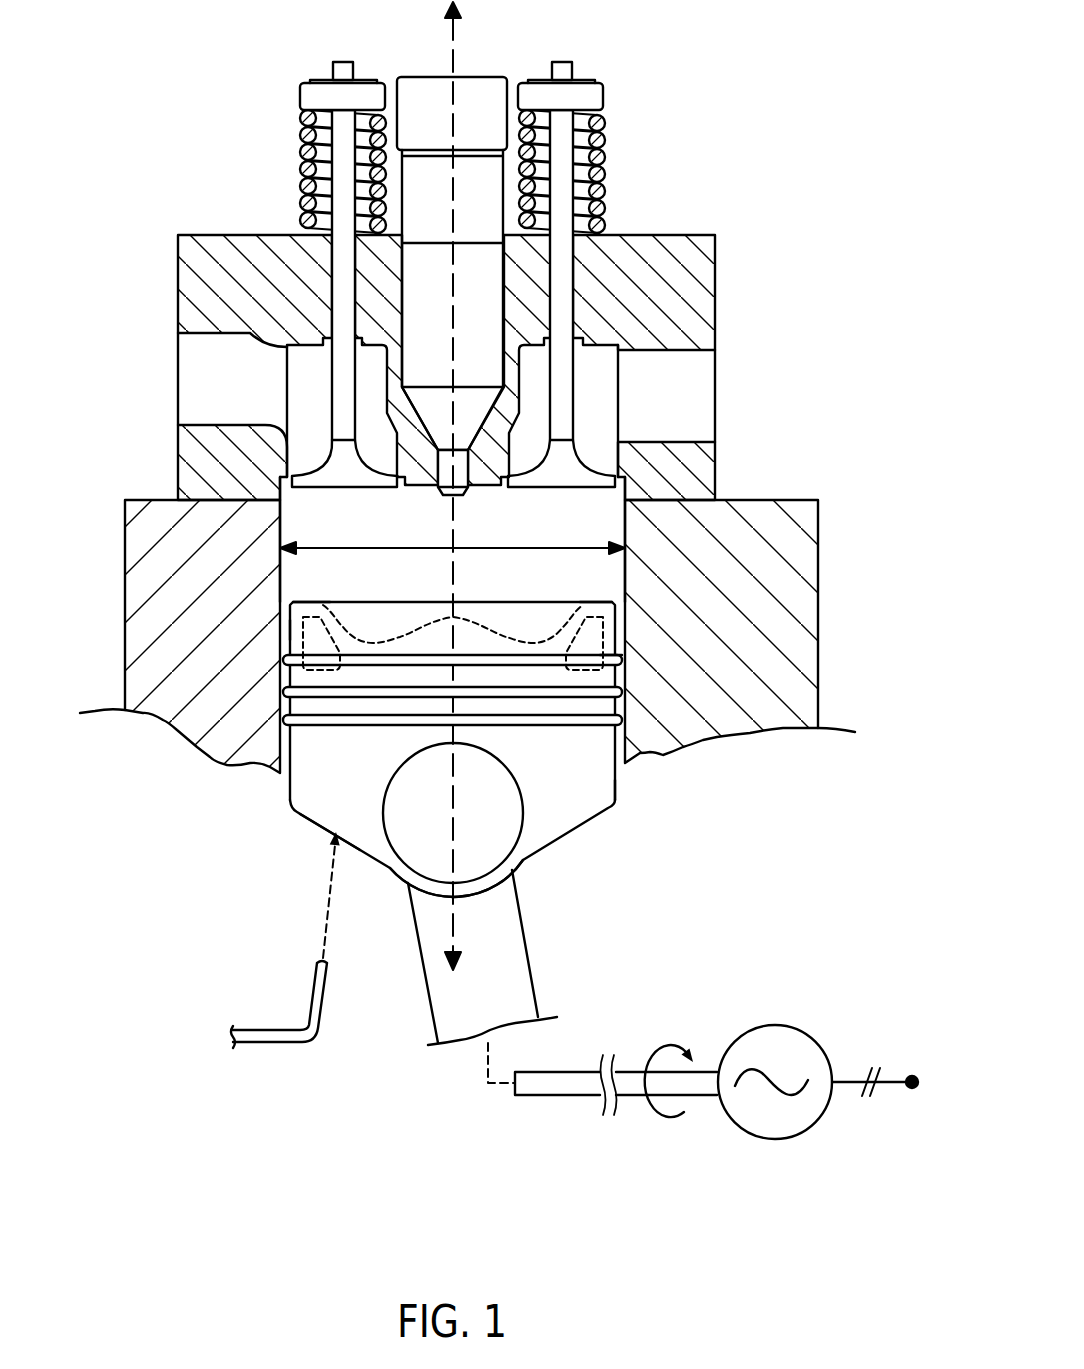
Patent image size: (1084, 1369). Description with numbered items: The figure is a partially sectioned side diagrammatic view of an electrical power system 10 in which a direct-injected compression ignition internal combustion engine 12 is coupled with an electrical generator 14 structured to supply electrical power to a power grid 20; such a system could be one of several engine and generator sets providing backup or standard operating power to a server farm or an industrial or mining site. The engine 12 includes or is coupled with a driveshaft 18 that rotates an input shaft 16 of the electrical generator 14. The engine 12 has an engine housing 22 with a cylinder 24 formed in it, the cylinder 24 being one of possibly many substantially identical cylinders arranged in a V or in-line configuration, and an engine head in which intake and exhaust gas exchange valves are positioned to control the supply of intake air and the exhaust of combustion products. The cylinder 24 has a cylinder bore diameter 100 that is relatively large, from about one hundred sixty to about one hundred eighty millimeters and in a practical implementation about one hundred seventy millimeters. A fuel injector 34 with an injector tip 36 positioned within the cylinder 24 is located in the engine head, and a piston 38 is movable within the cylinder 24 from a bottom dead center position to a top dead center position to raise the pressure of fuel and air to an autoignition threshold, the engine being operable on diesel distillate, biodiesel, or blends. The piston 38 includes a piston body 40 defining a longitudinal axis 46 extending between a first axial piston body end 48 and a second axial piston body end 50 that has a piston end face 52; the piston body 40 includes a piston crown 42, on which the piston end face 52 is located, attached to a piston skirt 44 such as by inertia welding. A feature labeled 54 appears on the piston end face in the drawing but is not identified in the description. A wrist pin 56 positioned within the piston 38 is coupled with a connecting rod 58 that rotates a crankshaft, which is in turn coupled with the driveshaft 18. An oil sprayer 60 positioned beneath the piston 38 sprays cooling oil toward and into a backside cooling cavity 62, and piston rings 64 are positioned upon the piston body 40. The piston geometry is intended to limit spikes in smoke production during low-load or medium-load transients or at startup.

The electrical power system 10 is at (150, 1018).
The direct-injected compression ignition internal combustion engine 12 is at (790, 132).
The electrical generator 14 is at (816, 1126).
The input shaft 16 is at (700, 1097).
The driveshaft 18 is at (572, 1097).
The power grid 20 is at (902, 1100).
The engine housing 22 is at (790, 500).
The cylinder 24 is at (308, 532).
The fuel injector 34 is at (493, 292).
The injector tip 36 is at (440, 494).
The piston 38 is at (608, 706).
The piston body 40 is at (293, 626).
The piston crown 42 is at (285, 604).
The piston skirt 44 is at (605, 793).
The longitudinal axis 46 is at (452, 812).
The first axial piston body end 48 is at (310, 832).
The second axial piston body end 50 is at (622, 588).
The piston end face 52 is at (304, 604).
The combustion bowl 54 is at (532, 618).
The wrist pin 56 is at (505, 840).
The connecting rod 58 is at (520, 973).
The oil sprayer 60 is at (318, 967).
The backside cooling cavity 62 is at (603, 628).
The piston rings 64 is at (623, 674).
The cylinder bore diameter 100 is at (540, 548).